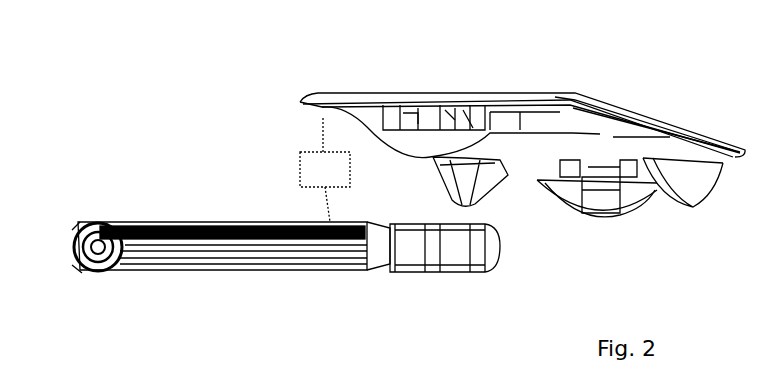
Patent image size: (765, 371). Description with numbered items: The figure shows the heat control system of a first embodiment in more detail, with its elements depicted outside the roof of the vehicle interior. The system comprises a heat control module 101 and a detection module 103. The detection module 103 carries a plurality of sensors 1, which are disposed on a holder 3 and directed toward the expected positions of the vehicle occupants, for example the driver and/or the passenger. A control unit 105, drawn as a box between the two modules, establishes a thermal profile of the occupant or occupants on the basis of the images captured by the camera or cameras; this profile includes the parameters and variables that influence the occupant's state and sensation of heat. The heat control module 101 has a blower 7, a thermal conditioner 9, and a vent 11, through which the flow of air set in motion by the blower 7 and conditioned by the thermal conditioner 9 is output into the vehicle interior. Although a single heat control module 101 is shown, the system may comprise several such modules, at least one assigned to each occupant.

The sensors 1 is at (418, 93).
The holder 3 is at (305, 101).
The blower 7 is at (415, 286).
The thermal conditioner 9 is at (246, 278).
The vent 11 is at (108, 284).
The heat control module 101 is at (175, 183).
The detection module 103 is at (326, 62).
The control unit 105 is at (325, 170).